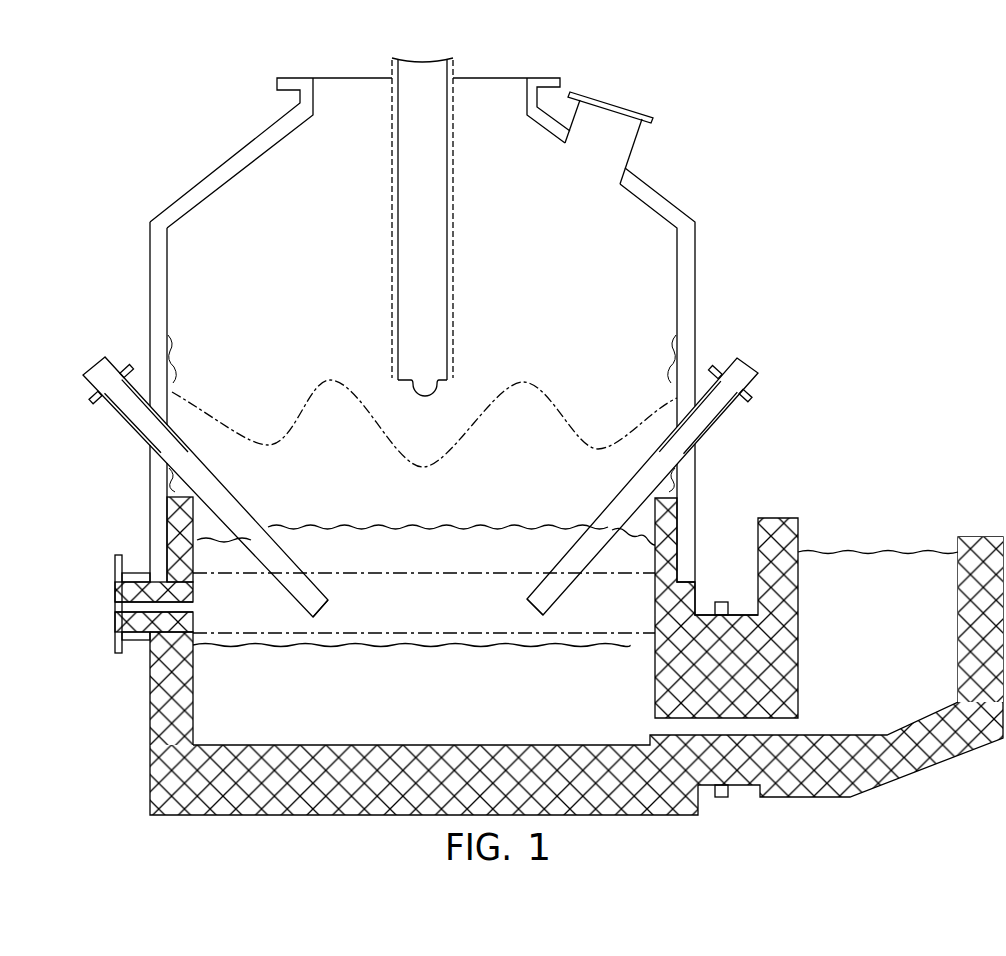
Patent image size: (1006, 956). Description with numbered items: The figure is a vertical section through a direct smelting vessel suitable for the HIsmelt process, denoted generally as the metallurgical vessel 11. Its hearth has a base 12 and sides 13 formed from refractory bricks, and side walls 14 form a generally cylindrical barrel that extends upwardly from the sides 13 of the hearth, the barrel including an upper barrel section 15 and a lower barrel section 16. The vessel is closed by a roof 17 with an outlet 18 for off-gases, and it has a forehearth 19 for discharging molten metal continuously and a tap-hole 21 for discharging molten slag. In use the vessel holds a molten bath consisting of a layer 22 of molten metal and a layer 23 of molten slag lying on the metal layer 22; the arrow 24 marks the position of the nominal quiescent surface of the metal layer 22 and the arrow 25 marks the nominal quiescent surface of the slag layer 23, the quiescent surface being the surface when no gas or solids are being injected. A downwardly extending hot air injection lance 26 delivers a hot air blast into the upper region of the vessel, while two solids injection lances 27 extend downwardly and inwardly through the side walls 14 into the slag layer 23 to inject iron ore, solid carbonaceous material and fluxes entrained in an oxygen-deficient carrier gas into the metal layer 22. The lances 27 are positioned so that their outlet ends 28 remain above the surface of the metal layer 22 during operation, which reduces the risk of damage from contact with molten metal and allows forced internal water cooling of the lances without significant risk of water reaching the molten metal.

The metallurgical vessel 11 is at (173, 204).
The base 12 is at (245, 765).
The sides 13 is at (172, 683).
The side walls 14 is at (151, 474).
The upper barrel section 15 is at (158, 283).
The lower barrel section 16 is at (160, 515).
The roof 17 is at (249, 158).
The outlet 18 is at (635, 140).
The forehearth 19 is at (888, 643).
The tap-hole 21 is at (122, 622).
The layer of molten metal 22 is at (477, 697).
The layer of molten slag 23 is at (377, 616).
The nominal quiescent surface of the metal layer 24 is at (456, 633).
The nominal quiescent surface of the slag layer 25 is at (461, 573).
The hot air injection lance 26 is at (437, 220).
The solids injection lances 27 is at (85, 378).
The outlet ends 28 is at (316, 618).